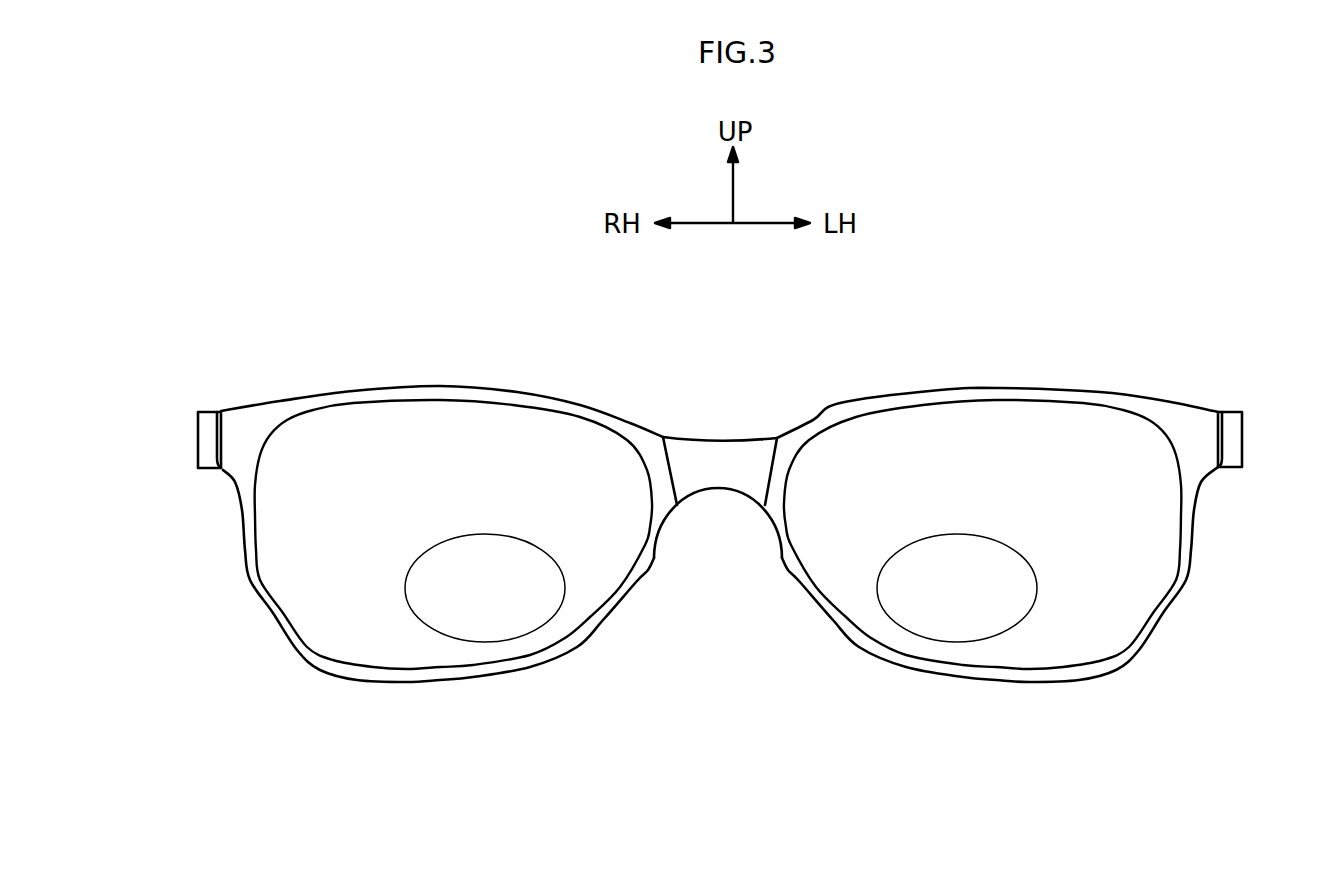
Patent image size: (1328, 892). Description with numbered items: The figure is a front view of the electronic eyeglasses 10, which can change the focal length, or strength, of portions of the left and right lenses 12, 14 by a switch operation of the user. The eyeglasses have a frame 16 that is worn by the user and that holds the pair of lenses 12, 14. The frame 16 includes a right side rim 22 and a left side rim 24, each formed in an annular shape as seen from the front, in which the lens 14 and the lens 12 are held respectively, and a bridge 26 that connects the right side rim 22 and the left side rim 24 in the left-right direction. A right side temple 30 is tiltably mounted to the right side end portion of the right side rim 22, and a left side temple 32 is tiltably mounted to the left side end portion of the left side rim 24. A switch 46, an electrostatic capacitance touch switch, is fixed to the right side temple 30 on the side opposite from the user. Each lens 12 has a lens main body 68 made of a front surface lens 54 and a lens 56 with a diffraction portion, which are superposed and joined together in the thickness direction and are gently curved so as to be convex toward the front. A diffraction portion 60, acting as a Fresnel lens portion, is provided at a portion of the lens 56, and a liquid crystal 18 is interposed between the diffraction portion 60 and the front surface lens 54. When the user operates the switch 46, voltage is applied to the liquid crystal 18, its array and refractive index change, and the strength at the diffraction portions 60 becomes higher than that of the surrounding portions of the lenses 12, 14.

The electronic eyeglasses 10 is at (1043, 297).
The lens 12 is at (1138, 606).
The lens 14 is at (340, 626).
The frame 16 is at (518, 386).
The liquid crystal 18 is at (517, 613).
The right side rim 22 is at (355, 389).
The left side rim 24 is at (942, 389).
The bridge 26 is at (718, 437).
The right side temple 30 is at (204, 411).
The left side temple 32 is at (1237, 411).
The switch 46 is at (198, 440).
The front surface lens 54 is at (600, 538).
The lens with a diffraction portion 56 is at (605, 498).
The diffraction portion 60 is at (475, 603).
The lens main body 68 is at (290, 566).